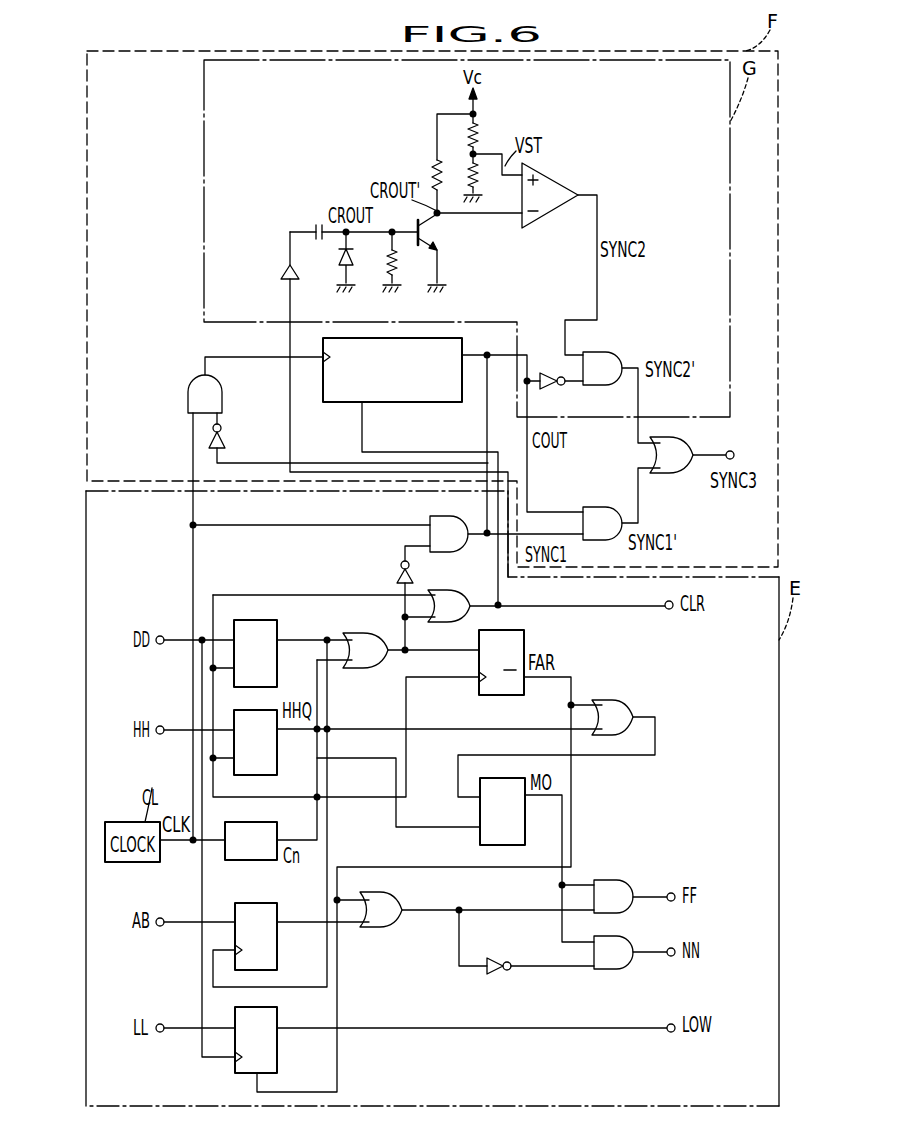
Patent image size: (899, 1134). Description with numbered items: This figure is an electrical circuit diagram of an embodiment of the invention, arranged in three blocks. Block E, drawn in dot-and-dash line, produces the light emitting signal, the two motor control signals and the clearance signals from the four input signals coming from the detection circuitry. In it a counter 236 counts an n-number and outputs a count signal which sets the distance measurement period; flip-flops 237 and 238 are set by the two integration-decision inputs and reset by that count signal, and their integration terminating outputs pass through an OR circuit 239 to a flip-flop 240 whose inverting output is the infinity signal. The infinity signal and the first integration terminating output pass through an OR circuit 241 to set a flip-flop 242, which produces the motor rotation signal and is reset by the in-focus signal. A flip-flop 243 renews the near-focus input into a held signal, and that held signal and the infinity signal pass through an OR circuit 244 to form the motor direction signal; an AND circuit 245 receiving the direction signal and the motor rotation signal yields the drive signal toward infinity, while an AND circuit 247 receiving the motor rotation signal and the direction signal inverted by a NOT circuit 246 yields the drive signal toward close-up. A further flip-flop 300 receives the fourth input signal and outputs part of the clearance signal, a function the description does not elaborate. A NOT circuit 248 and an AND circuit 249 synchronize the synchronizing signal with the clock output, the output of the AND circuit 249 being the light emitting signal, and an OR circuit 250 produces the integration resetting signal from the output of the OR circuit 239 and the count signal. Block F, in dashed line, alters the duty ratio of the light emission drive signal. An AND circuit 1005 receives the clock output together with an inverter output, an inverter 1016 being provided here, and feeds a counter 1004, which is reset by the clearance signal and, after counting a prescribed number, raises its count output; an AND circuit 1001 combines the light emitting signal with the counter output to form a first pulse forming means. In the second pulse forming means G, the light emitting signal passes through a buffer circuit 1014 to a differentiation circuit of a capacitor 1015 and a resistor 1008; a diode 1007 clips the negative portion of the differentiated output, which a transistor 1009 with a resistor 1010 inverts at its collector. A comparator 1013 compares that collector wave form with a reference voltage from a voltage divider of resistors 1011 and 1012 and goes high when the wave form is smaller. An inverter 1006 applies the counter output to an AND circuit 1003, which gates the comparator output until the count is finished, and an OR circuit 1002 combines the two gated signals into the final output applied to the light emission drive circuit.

The resistor 1011 is at (478, 135).
The resistor 1010 is at (431, 172).
The resistor 1012 is at (477, 186).
The comparator 1013 is at (553, 178).
The transistor 1009 is at (439, 236).
The capacitor 1015 is at (318, 224).
The buffer circuit 1014 is at (281, 276).
The diode 1007 is at (338, 262).
The resistor 1008 is at (398, 273).
The AND circuit 1005 is at (188, 401).
The inverter 1016 is at (226, 445).
The counter 1004 is at (416, 403).
The inverter 1006 is at (545, 372).
The AND circuit 1003 is at (600, 352).
The OR circuit 1002 is at (684, 447).
The AND circuit 1001 is at (600, 505).
The AND circuit 249 is at (434, 516).
The NOT circuit 248 is at (397, 576).
The OR circuit 250 is at (470, 581).
The flip-flop 237 is at (270, 620).
The flip-flop 238 is at (268, 710).
The OR circuit 239 is at (360, 633).
The flip-flop 240 is at (512, 630).
The OR circuit 241 is at (613, 700).
The flip-flop 242 is at (492, 846).
The counter 236 is at (265, 822).
The flip-flop 243 is at (270, 903).
The OR circuit 244 is at (398, 896).
The AND circuit 245 is at (616, 880).
The NOT circuit 246 is at (498, 975).
The AND circuit 247 is at (612, 970).
The D flip-flop 300 is at (272, 1009).